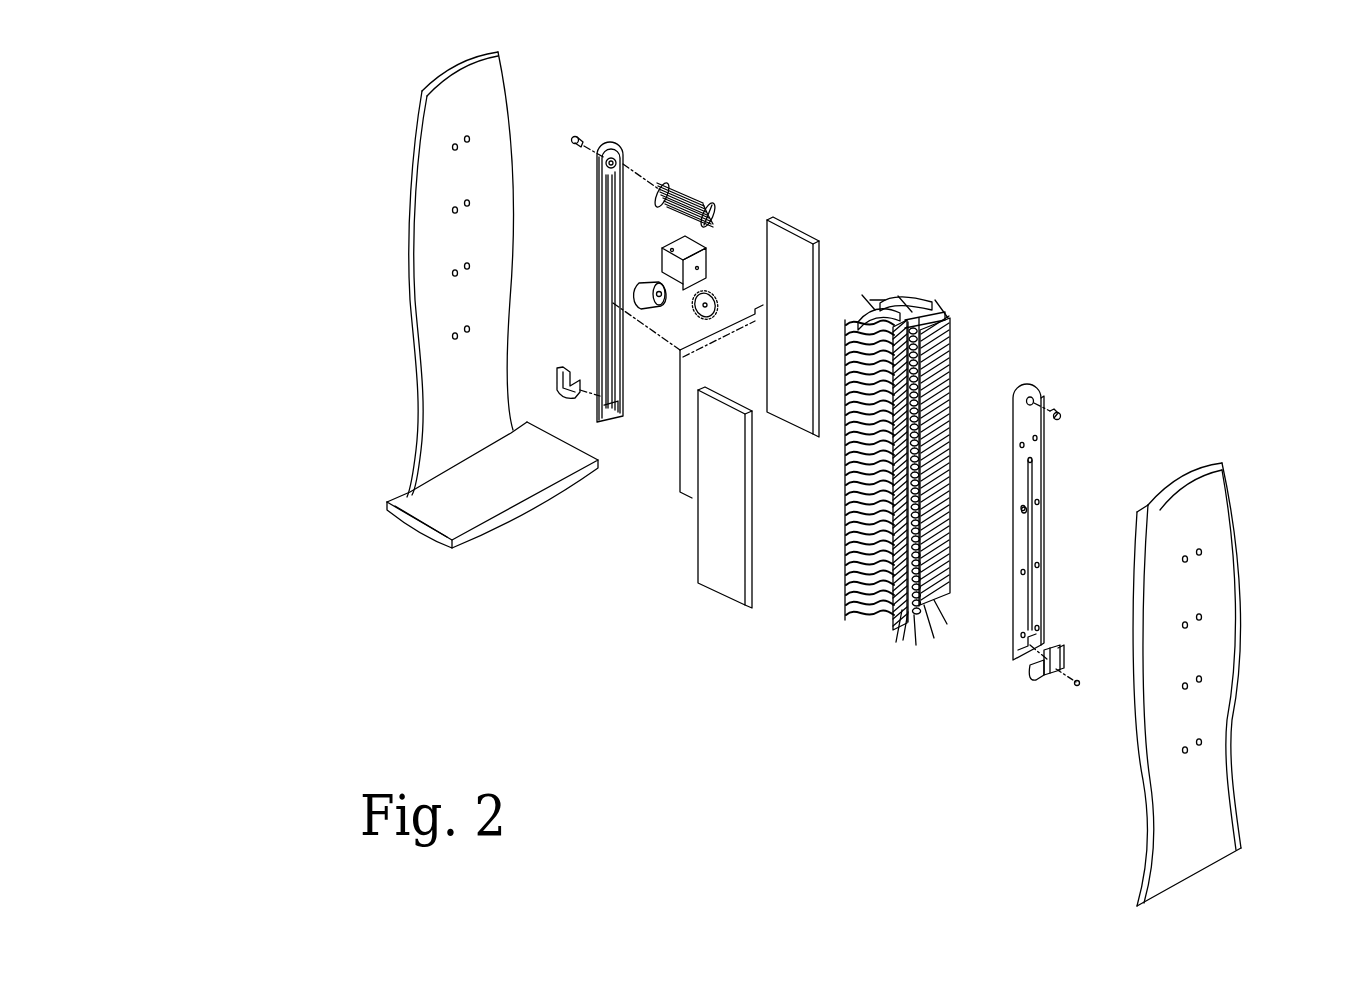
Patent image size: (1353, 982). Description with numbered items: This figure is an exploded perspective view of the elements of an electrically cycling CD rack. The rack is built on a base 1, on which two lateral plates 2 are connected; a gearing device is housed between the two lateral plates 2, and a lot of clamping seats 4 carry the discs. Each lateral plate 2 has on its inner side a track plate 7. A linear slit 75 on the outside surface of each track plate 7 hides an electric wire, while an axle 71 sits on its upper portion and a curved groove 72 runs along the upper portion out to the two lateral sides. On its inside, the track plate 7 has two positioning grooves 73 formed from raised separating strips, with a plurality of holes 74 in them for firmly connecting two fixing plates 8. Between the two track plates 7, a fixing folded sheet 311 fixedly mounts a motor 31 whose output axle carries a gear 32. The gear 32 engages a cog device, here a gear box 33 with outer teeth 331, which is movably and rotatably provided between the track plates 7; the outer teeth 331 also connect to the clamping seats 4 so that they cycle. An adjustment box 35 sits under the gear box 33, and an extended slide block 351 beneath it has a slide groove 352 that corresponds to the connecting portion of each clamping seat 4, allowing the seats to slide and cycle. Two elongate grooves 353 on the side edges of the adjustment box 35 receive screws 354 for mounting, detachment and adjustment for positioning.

The base 1 is at (483, 497).
The lateral plates 2 is at (430, 238).
The clamping seats 4 is at (882, 300).
The track plate 7 is at (612, 138).
The fixing plates 8 is at (790, 231).
The motor 31 is at (650, 282).
The gear 32 is at (714, 303).
The gear box 33 is at (728, 156).
The adjustment box 35 is at (1047, 666).
The axle 71 is at (577, 132).
The curved groove 72 is at (607, 198).
The positioning grooves 73 is at (610, 267).
The holes 74 is at (1023, 513).
The linear slit 75 is at (1033, 487).
The fixing folded sheet 311 is at (692, 250).
The outer teeth 331 is at (670, 185).
The extended slide block 351 is at (1053, 688).
The slide groove 352 is at (1040, 688).
The elongate grooves 353 is at (1063, 660).
The screws 354 is at (1077, 690).